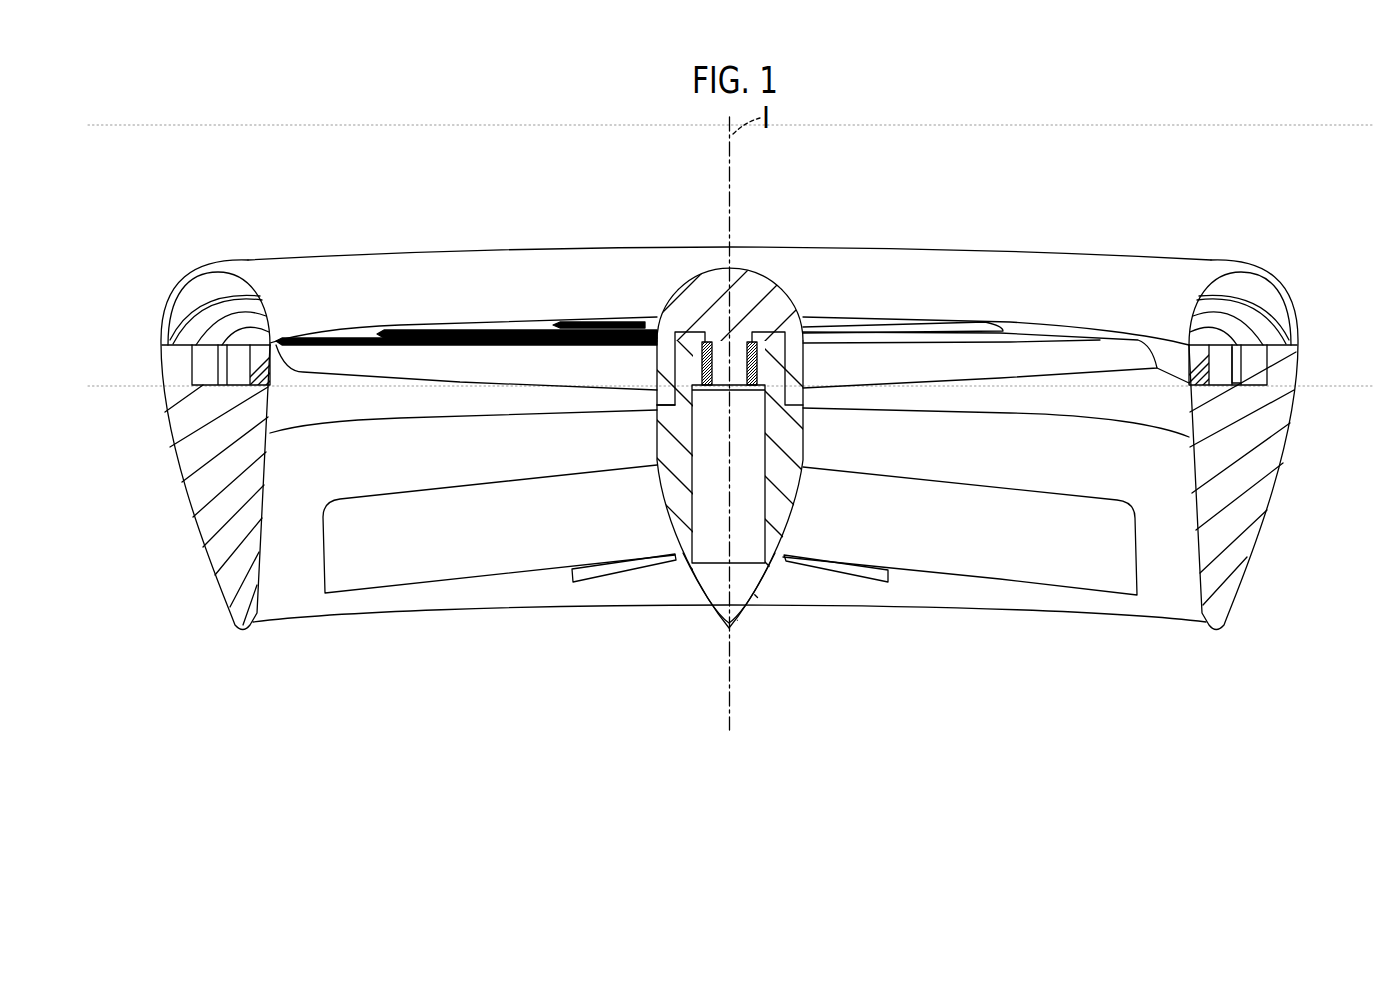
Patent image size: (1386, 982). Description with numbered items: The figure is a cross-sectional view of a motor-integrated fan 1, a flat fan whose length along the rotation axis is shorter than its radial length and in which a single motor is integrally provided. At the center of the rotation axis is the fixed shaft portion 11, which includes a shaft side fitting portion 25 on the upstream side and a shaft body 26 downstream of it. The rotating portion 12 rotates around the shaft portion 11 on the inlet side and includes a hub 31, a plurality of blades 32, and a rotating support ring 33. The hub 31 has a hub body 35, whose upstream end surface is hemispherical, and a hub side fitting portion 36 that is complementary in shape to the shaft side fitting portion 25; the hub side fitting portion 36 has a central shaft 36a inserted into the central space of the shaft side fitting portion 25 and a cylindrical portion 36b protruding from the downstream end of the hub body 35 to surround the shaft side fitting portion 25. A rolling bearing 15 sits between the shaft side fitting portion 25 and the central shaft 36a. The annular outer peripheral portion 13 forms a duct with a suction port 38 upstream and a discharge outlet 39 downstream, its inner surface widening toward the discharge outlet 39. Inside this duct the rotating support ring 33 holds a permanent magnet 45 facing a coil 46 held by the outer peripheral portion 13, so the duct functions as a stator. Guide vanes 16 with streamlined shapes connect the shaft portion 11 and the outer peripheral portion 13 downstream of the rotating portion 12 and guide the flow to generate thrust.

The motor-integrated fan 1 is at (823, 170).
The shaft portion 11 is at (681, 577).
The rotating portion 12 is at (783, 286).
The outer peripheral portion 13 is at (348, 253).
The rolling bearing 15 is at (692, 330).
The guide vane 16 is at (985, 563).
The shaft side fitting portion 25 is at (771, 338).
The shaft body 26 is at (780, 518).
The hub 31 is at (742, 264).
The blades 32 is at (470, 360).
The rotating support ring 33 is at (228, 366).
The hub body 35 is at (753, 290).
The hub side fitting portion 36 is at (652, 365).
The central shaft 36a is at (692, 494).
The cylindrical portion 36b is at (657, 468).
The suction port 38 is at (999, 247).
The discharge outlet 39 is at (1052, 637).
The permanent magnet 45 is at (1218, 370).
The coil 46 is at (1254, 364).